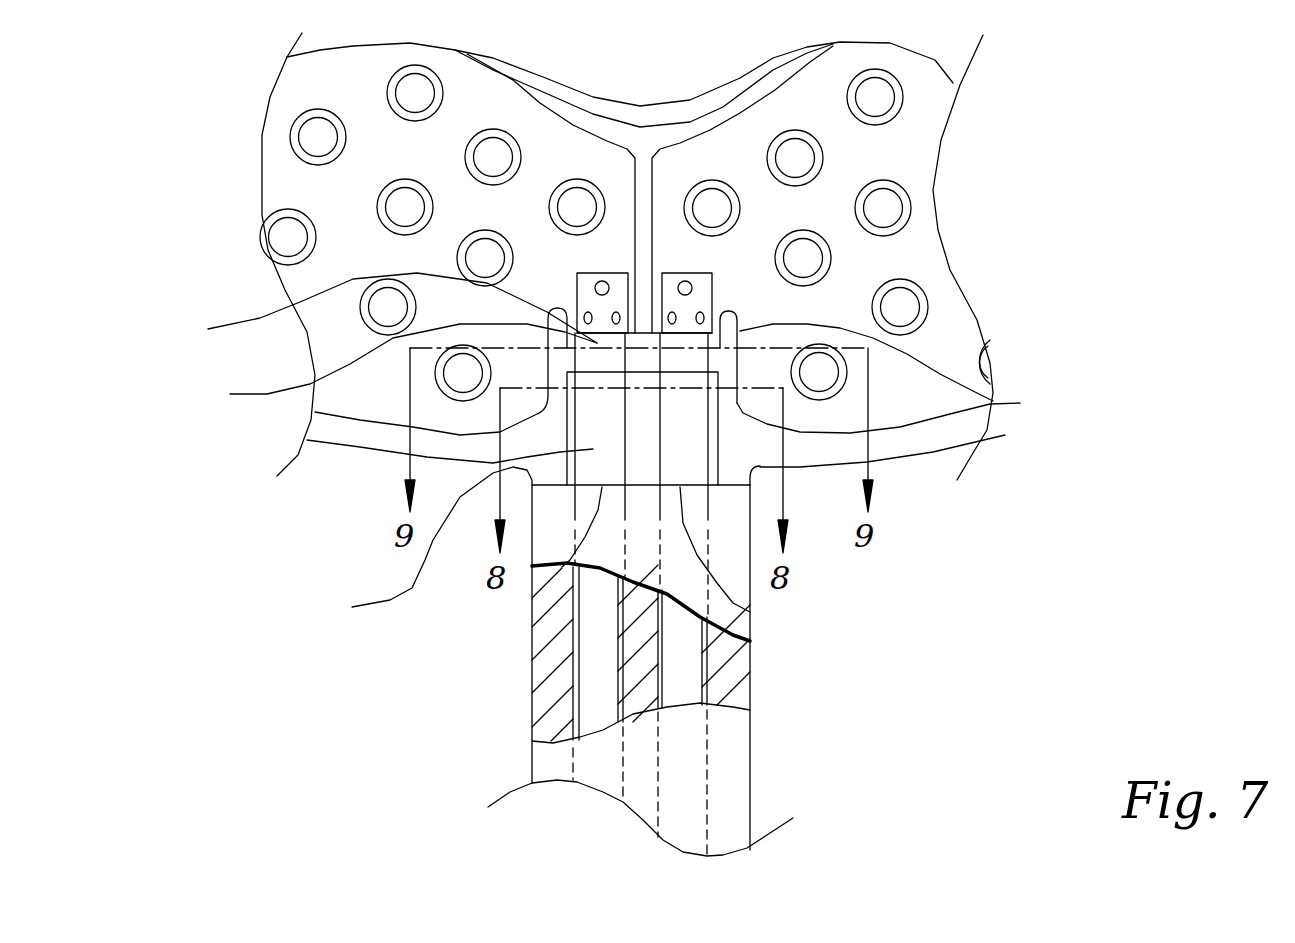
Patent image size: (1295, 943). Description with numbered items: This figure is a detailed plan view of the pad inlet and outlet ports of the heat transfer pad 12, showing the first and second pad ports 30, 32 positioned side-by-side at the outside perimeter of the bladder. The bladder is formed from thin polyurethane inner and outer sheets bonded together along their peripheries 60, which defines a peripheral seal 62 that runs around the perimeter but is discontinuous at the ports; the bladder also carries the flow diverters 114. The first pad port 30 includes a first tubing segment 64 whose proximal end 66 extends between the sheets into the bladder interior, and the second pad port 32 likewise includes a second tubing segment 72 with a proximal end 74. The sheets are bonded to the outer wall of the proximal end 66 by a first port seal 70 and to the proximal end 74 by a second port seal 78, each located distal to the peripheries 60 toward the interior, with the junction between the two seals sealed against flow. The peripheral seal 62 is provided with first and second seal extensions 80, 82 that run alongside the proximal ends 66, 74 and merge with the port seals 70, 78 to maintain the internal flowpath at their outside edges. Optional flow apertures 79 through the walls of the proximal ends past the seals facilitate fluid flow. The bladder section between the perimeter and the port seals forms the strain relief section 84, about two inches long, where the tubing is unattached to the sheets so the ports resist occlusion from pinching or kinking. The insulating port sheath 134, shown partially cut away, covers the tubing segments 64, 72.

The heat transfer pad 12 is at (1072, 70).
The flow diverters 114 is at (643, 231).
The flow apertures 79 is at (685, 288).
The first seal extension 80 is at (688, 358).
The second seal extension 82 is at (383, 308).
The second port seal 78 is at (590, 366).
The first port seal 70 is at (1020, 403).
The peripheral seal 62 is at (933, 438).
The peripheries 60 is at (360, 443).
The strain relief section 84 is at (740, 414).
The proximal end 66 is at (692, 448).
The proximal end 74 is at (423, 625).
The second pad port 32 is at (532, 598).
The first pad port 30 is at (750, 612).
The first tubing segment 64 is at (690, 667).
The second tubing segment 72 is at (593, 708).
The port sheath 134 is at (730, 755).